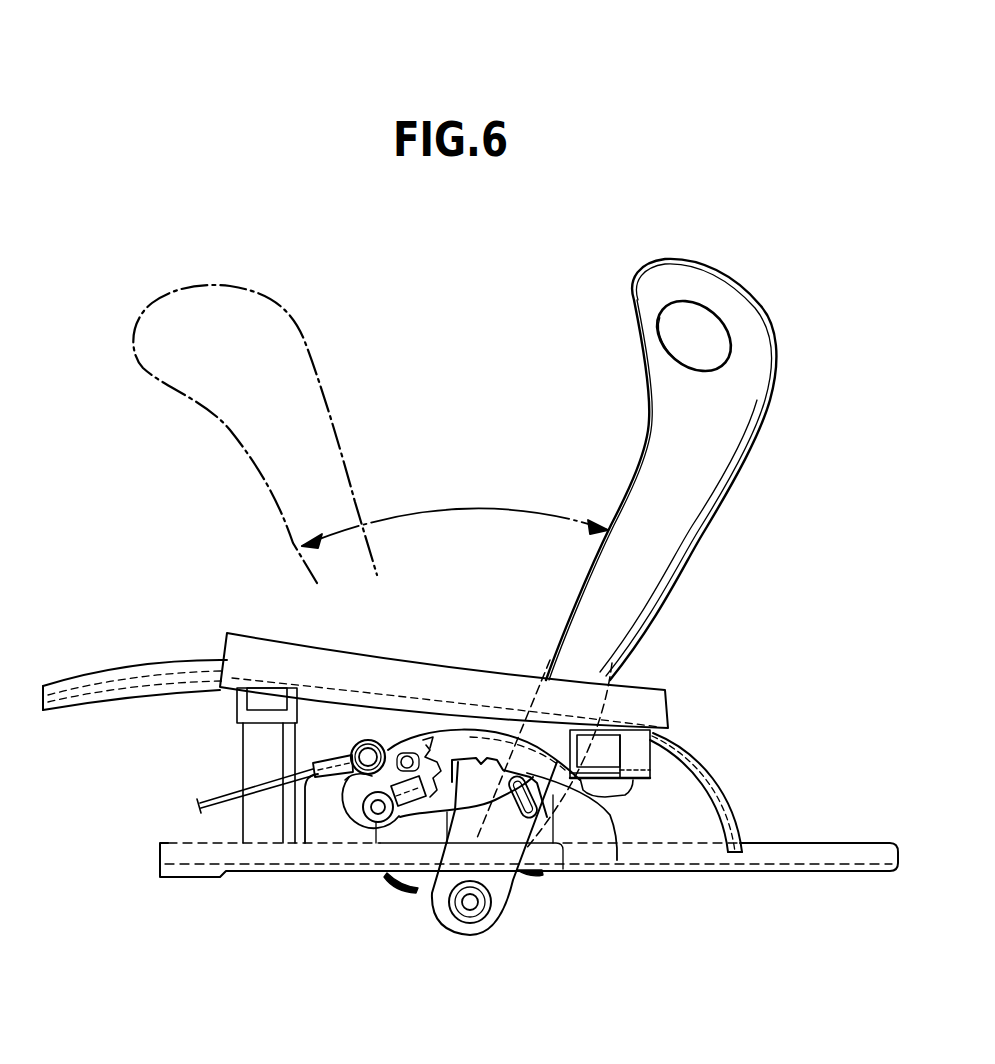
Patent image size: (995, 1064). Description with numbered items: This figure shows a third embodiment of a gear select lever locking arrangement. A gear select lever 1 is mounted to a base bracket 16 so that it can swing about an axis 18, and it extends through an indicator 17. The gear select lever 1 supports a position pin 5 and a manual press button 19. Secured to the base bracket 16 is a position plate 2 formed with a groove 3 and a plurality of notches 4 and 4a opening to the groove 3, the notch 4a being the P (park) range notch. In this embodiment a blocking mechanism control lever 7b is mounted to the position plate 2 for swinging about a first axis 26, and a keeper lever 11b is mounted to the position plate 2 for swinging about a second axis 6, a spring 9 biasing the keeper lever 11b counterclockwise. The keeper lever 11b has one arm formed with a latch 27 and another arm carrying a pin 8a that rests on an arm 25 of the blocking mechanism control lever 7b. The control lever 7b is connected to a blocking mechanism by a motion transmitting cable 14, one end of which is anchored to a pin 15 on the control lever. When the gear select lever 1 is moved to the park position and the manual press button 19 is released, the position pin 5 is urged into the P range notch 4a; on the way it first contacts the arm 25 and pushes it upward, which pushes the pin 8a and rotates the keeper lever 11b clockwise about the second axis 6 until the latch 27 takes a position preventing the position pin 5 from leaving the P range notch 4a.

The gear select lever 1 is at (307, 387).
The position plate 2 is at (480, 752).
The groove 3 is at (462, 760).
The notches 4 is at (500, 790).
The P range notch 4a is at (422, 740).
The position pin 5 is at (603, 806).
The second axis 6 is at (400, 750).
The blocking mechanism control lever 7b is at (340, 800).
The pin 8a is at (352, 754).
The spring 9 is at (440, 760).
The keeper lever 11b is at (392, 745).
The motion transmitting cable 14 is at (207, 800).
The pin 15 is at (360, 745).
The base bracket 16 is at (160, 855).
The indicator 17 is at (248, 650).
The axis 18 is at (474, 905).
The manual press button 19 is at (685, 347).
The arm 25 is at (406, 820).
The first axis 26 is at (374, 813).
The latch 27 is at (446, 810).